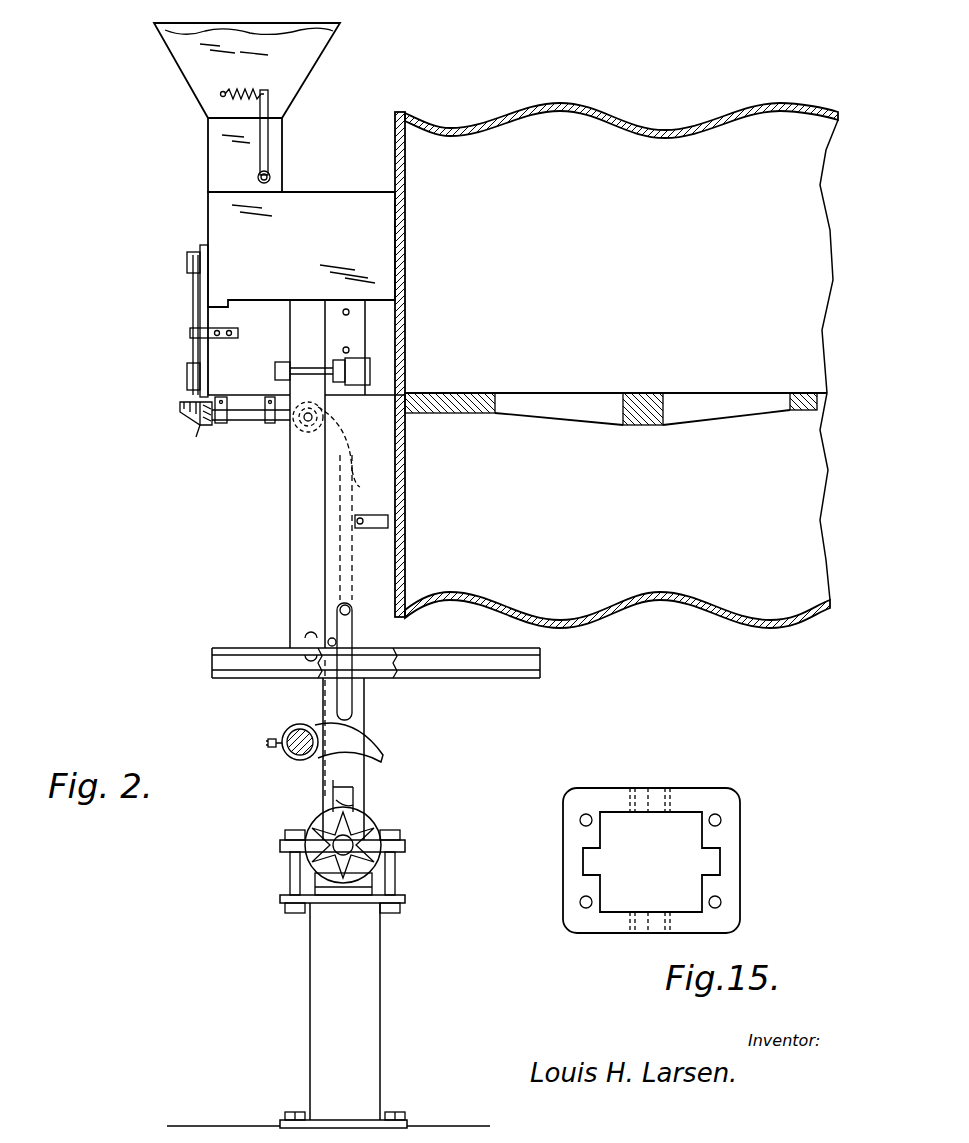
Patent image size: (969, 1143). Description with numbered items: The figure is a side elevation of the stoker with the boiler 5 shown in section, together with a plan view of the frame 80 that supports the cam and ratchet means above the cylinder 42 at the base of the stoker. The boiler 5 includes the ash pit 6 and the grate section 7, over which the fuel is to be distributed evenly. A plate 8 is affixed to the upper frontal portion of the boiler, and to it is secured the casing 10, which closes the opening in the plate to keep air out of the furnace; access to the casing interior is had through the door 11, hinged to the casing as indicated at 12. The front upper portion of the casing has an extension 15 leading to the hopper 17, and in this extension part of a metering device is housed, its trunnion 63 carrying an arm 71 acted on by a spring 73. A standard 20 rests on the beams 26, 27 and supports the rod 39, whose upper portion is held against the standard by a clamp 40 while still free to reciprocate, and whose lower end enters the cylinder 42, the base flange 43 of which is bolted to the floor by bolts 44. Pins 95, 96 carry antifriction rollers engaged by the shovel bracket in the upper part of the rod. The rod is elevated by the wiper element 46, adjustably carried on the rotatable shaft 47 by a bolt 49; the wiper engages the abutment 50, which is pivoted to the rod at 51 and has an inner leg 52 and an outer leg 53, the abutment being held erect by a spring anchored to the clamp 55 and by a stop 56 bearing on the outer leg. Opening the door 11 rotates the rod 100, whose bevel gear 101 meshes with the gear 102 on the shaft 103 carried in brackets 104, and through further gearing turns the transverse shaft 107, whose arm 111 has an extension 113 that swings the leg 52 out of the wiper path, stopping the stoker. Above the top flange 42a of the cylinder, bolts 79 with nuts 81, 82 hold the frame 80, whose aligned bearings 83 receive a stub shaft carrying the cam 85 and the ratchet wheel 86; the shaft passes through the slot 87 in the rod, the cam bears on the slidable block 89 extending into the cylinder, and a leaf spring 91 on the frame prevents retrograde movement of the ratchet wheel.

In FIG. 2, the hopper 17 is at (318, 48).
In FIG. 2, the spring 73 is at (236, 90).
In FIG. 2, the extension 15 is at (214, 136).
In FIG. 2, the arm 71 is at (270, 138).
In FIG. 2, the trunnion 63 is at (257, 176).
In FIG. 2, the casing 10 is at (322, 200).
In FIG. 2, the plate 8 is at (405, 153).
In FIG. 2, the boiler 5 is at (663, 120).
In FIG. 2, the grate section 7 is at (622, 392).
In FIG. 2, the ash pit 6 is at (753, 541).
In FIG. 2, the door 11 is at (203, 290).
In FIG. 2, the hinge 12 is at (187, 262).
In FIG. 2, the rod 100 is at (190, 343).
In FIG. 2, the bevel gear 101 is at (186, 408).
In FIG. 2, the gear 102 is at (207, 427).
In FIG. 2, the shaft 103 is at (250, 421).
In FIG. 2, the brackets 104 is at (268, 398).
In FIG. 2, the pin 95 is at (350, 312).
In FIG. 2, the pin 96 is at (350, 350).
In FIG. 2, the clamp 40 is at (370, 372).
In FIG. 2, the transverse shaft 107 is at (305, 425).
In FIG. 2, the arm 111 is at (340, 428).
In FIG. 2, the extension 113 is at (362, 486).
In FIG. 2, the inner leg 52 is at (338, 570).
In FIG. 2, the standard 20 is at (288, 513).
In FIG. 2, the clamp 55 is at (388, 522).
In FIG. 2, the abutment 50 is at (352, 628).
In FIG. 2, the pivot 51 is at (350, 606).
In FIG. 2, the stop 56 is at (330, 640).
In FIG. 2, the beam 26 is at (380, 672).
In FIG. 2, the beam 27 is at (222, 680).
In FIG. 2, the outer leg 53 is at (340, 688).
In FIG. 2, the rod 39 is at (366, 706).
In FIG. 2, the rotatable shaft 47 is at (292, 758).
In FIG. 2, the bolt 49 is at (266, 744).
In FIG. 2, the wiper element 46 is at (383, 753).
In FIG. 2, the slot 87 is at (340, 786).
In FIG. 2, the cam 85 is at (308, 818).
In FIG. 2, the bearings 83 is at (316, 840).
In FIG. 15, the bearings 83 is at (650, 790).
In FIG. 2, the leaf spring 91 is at (360, 835).
In FIG. 2, the nut 82 is at (405, 852).
In FIG. 2, the nut 81 is at (400, 835).
In FIG. 2, the bolts 79 is at (290, 873).
In FIG. 2, the top flange 42a is at (405, 898).
In FIG. 2, the ratchet wheel 86 is at (342, 878).
In FIG. 2, the slidable block 89 is at (362, 890).
In FIG. 2, the cylinder 42 is at (323, 972).
In FIG. 2, the base flange 43 is at (408, 1120).
In FIG. 2, the bolts 44 is at (295, 1110).
In FIG. 15, the frame 80 is at (730, 800).